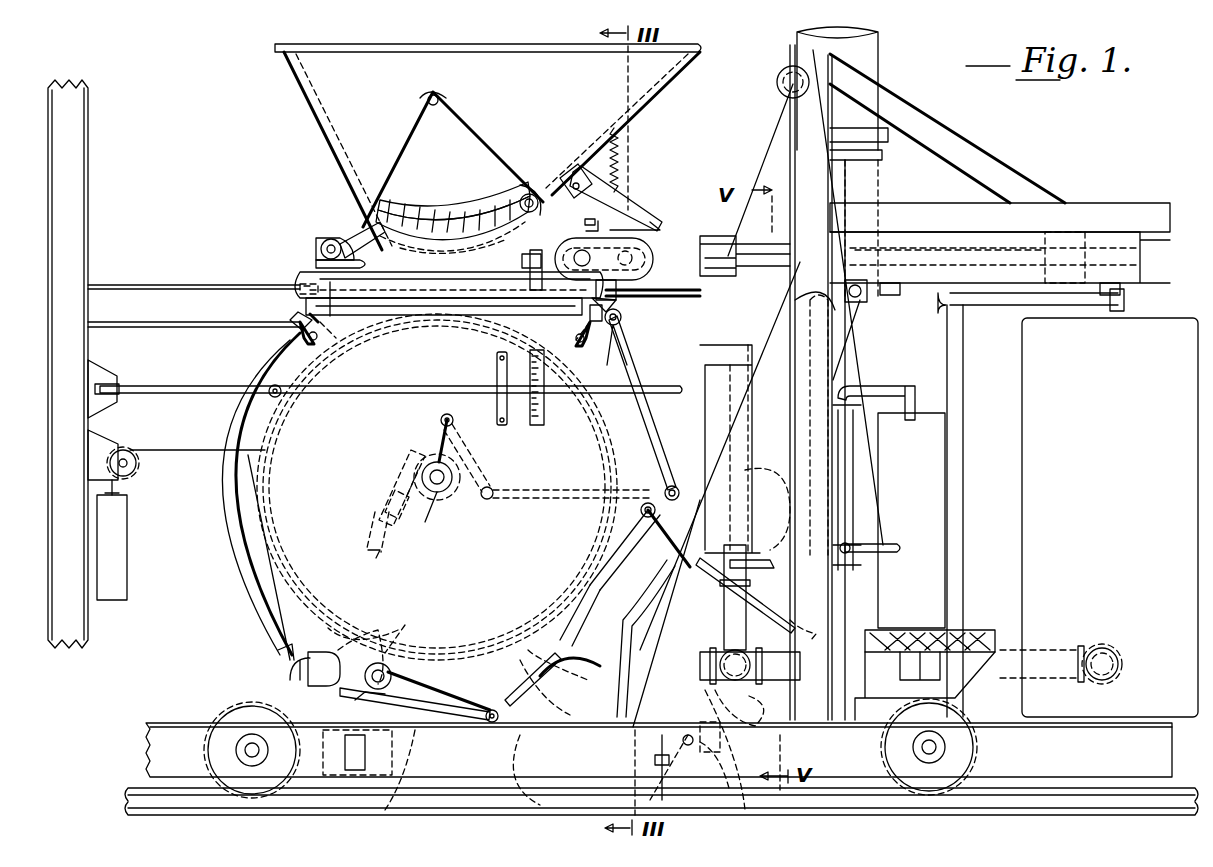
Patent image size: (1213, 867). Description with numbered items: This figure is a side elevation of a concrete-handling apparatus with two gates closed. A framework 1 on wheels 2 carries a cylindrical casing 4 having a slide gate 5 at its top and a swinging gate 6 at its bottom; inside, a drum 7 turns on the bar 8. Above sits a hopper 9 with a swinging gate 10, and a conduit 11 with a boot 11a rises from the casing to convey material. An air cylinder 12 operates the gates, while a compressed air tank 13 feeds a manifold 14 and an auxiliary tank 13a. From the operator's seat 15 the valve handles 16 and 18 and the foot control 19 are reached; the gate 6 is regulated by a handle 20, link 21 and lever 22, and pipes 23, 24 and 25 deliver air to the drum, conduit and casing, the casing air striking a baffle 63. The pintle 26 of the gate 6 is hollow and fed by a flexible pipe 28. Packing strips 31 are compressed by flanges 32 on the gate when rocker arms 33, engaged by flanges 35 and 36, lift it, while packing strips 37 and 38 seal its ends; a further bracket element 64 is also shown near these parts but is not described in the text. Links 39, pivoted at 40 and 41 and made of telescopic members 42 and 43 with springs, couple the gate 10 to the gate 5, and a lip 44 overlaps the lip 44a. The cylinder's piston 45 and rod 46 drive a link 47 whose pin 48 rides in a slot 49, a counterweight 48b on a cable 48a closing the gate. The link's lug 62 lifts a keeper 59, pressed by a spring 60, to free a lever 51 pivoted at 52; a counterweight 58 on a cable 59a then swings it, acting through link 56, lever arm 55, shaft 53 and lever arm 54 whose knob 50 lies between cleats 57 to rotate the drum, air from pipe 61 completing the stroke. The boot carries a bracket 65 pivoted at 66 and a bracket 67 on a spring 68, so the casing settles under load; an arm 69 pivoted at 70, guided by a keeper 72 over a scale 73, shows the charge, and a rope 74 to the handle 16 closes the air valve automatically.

The framework 1 is at (166, 724).
The wheels 2 is at (230, 712).
The cylindrical casing 4 is at (258, 476).
The slide gate 5 is at (318, 266).
The swinging gate 6 is at (506, 664).
The drum 7 is at (242, 506).
The bar 8 is at (437, 495).
The hopper 9 is at (335, 70).
The swinging gate 10 is at (416, 128).
The conduit 11 is at (870, 62).
The boot 11a is at (462, 785).
The air cylinder 12 is at (1118, 258).
The compressed air tank 13 is at (1068, 503).
The auxiliary tank 13a is at (877, 461).
The manifold 14 is at (742, 672).
The operator's seat 15 is at (986, 629).
The air valve handle 16 is at (894, 544).
The air valve handle 18 is at (748, 584).
The foot control 19 is at (732, 756).
The handle 20 is at (666, 532).
The link 21 is at (616, 556).
The lever 22 is at (470, 720).
The pipe 23 is at (242, 560).
The pipe 24 is at (638, 600).
The pipe 25 is at (288, 678).
The pintle 26 is at (377, 640).
The flexible pipe 28 is at (396, 712).
The packing strips 31 is at (430, 310).
The flanges 32 is at (468, 302).
The rocker arms 33 is at (300, 329).
The flange 35 is at (296, 305).
The flange 36 is at (602, 304).
The packing strip 37 is at (304, 284).
The packing strip 38 is at (536, 255).
The links 39 is at (481, 200).
The pivot 40 is at (330, 245).
The pivot 41 is at (529, 193).
The telescopic member 42 is at (420, 227).
The telescopic member 43 is at (360, 228).
The protruding lip 44 is at (522, 262).
The lip 44a is at (452, 243).
The piston 45 is at (1064, 236).
The rod 46 is at (994, 248).
The link 47 is at (696, 259).
The pin 48 is at (582, 253).
The cable 48a is at (705, 328).
The counterweight 48b is at (767, 509).
The slot 49 is at (652, 294).
The knob 50 is at (388, 514).
The lever 51 is at (650, 426).
The pivot 52 is at (622, 324).
The shaft 53 is at (442, 420).
The lever arm 54 is at (480, 456).
The lever arm 55 is at (402, 486).
The link 56 is at (573, 497).
The cleats 57 is at (380, 560).
The counterweight 58 is at (114, 554).
The keeper 59 is at (601, 194).
The cable 59a is at (180, 444).
The spring 60 is at (622, 138).
The pipe 61 is at (858, 310).
The lug 62 is at (606, 190).
The baffle 63 is at (365, 565).
The bracket 64 is at (332, 330).
The bracket 65 is at (720, 800).
The pivot 66 is at (671, 742).
The bracket 67 is at (366, 678).
The spring 68 is at (333, 752).
The arm 69 is at (334, 391).
The pivot 70 is at (112, 382).
The keeper 72 is at (497, 405).
The scale 73 is at (544, 405).
The rope 74 is at (687, 350).